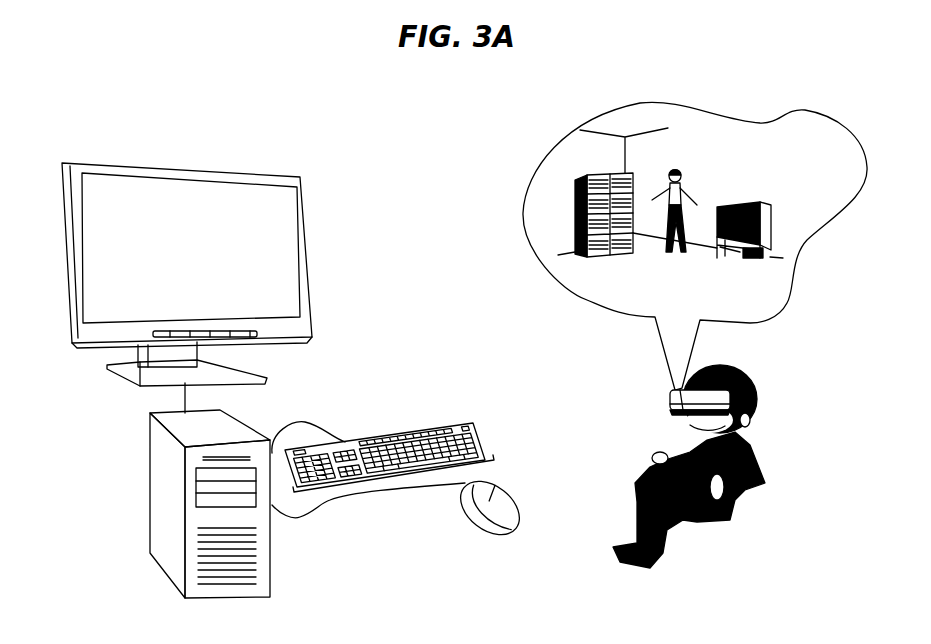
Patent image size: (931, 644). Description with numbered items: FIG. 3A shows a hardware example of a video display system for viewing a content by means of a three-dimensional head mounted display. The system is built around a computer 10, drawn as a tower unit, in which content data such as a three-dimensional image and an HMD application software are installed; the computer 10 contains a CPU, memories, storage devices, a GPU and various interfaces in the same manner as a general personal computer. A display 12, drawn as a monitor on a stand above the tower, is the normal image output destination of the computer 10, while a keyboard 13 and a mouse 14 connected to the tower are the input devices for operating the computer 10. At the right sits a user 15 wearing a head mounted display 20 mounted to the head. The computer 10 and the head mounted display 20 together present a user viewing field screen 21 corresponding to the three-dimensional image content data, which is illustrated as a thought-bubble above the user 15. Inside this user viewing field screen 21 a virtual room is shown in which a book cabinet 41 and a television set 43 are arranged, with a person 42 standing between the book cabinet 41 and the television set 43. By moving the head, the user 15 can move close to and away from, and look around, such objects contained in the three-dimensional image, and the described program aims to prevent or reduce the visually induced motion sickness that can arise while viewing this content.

The computer 10 is at (148, 483).
The display 12 is at (233, 173).
The keyboard 13 is at (366, 441).
The mouse 14 is at (466, 510).
The user 15 is at (750, 445).
The head mounted display 20 is at (668, 408).
The user viewing field screen 21 is at (520, 222).
The book cabinet 41 is at (604, 204).
The person 42 is at (683, 176).
The television set 43 is at (758, 207).